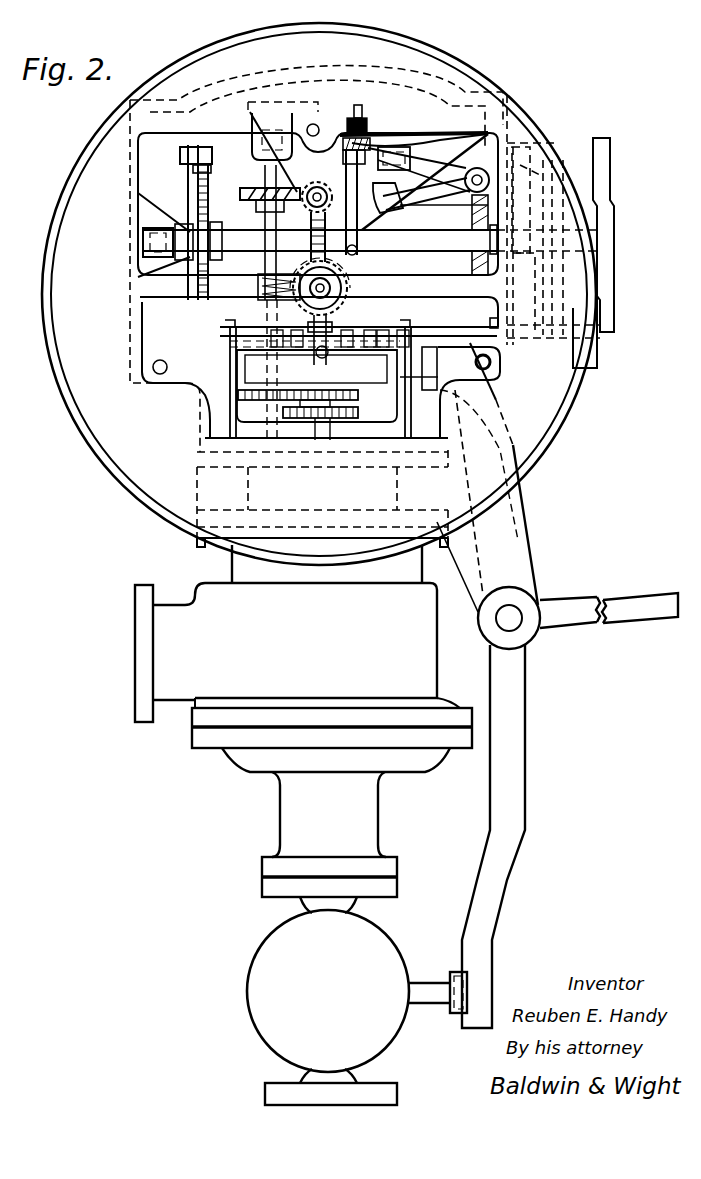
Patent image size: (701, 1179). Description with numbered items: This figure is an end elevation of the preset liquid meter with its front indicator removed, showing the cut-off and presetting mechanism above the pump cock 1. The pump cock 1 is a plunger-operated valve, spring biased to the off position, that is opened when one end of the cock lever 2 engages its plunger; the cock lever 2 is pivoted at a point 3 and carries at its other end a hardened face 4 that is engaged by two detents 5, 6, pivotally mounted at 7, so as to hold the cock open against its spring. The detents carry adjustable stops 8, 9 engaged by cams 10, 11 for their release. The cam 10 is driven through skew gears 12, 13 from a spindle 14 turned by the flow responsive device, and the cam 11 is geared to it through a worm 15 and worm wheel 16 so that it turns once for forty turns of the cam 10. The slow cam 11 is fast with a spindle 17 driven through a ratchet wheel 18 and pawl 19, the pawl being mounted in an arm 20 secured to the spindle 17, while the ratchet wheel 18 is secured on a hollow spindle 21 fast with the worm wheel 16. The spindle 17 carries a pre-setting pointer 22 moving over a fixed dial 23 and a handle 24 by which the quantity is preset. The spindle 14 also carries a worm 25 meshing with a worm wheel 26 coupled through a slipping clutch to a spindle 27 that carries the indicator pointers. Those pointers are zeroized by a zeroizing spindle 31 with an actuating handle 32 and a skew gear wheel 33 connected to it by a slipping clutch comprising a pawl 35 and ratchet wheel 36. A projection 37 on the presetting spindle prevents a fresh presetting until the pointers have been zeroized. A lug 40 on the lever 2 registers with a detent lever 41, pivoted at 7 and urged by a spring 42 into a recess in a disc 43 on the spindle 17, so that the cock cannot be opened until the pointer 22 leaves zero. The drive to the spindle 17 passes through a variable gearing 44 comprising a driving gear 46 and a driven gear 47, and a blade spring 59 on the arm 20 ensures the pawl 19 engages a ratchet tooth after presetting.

The pump cock 1 is at (342, 985).
The cock lever 2 is at (440, 335).
The pivot point 3 is at (518, 614).
The hardened face 4 is at (425, 182).
The detent 5 is at (438, 133).
The detent 6 is at (438, 158).
The pivot 7 is at (482, 170).
The adjustable stop 8 is at (362, 118).
The adjustable stop 9 is at (353, 112).
The cam 10 is at (315, 186).
The cam 11 is at (358, 216).
The skew gear 12 is at (285, 180).
The skew gear 13 is at (240, 194).
The spindle 14 is at (258, 214).
The worm 15 is at (310, 214).
The worm wheel 16 is at (310, 238).
The spindle 17 is at (372, 252).
The ratchet wheel 18 is at (205, 308).
The pawl 19 is at (212, 163).
The arm 20 is at (188, 206).
The hollow spindle 21 is at (252, 250).
The pre-setting pointer 22 is at (548, 162).
The fixed dial 23 is at (530, 150).
The handle 24 is at (604, 140).
The worm 25 is at (258, 288).
The worm wheel 26 is at (372, 282).
The spindle 27 is at (352, 288).
The zeroizing spindle 31 is at (478, 347).
The actuating handle 32 is at (590, 372).
The skew gear wheel 33 is at (314, 362).
The pawl 35 is at (330, 362).
The ratchet wheel 36 is at (334, 322).
The projection 37 is at (357, 244).
The lug 40 is at (385, 240).
The detent lever 41 is at (425, 204).
The spring 42 is at (425, 152).
The disc 43 is at (472, 264).
The gearing 44 is at (335, 409).
The driving gear 46 is at (352, 425).
The driven gear 47 is at (362, 392).
The blade spring 59 is at (188, 184).